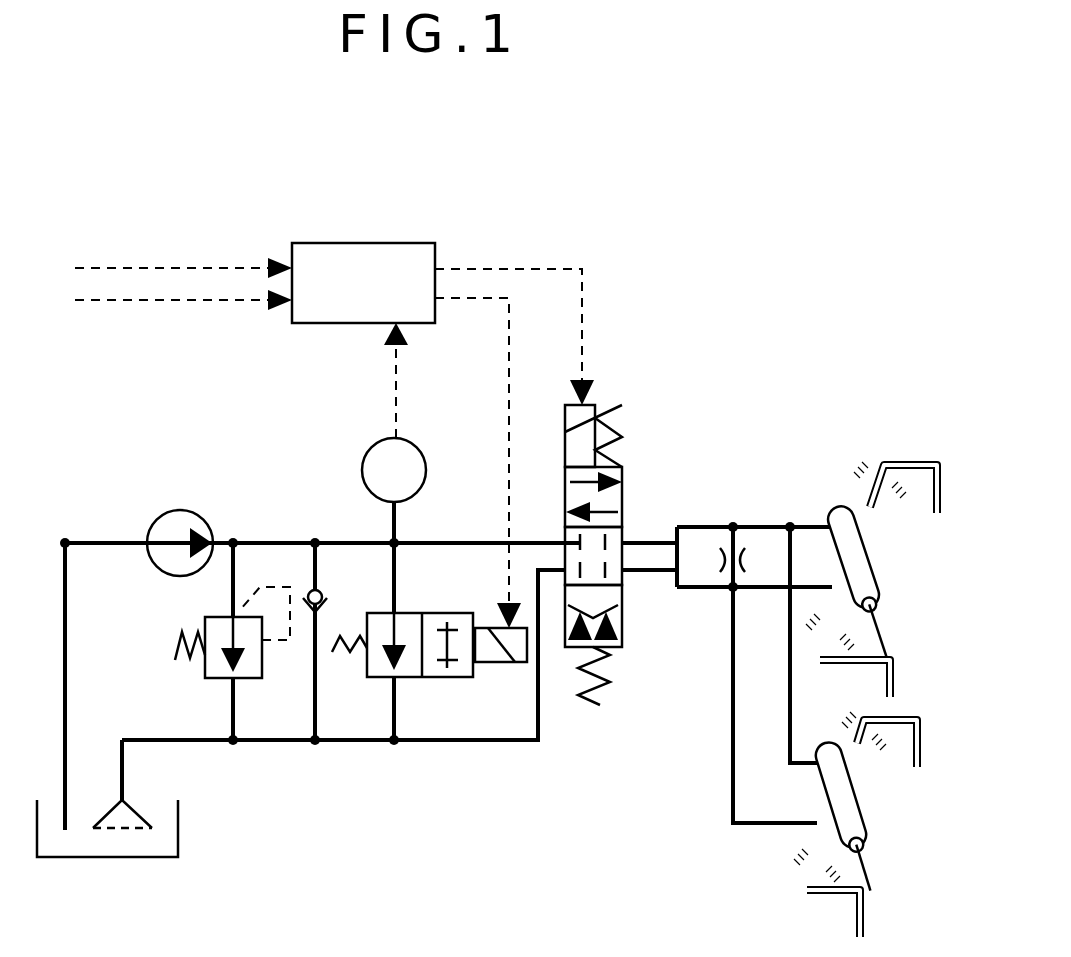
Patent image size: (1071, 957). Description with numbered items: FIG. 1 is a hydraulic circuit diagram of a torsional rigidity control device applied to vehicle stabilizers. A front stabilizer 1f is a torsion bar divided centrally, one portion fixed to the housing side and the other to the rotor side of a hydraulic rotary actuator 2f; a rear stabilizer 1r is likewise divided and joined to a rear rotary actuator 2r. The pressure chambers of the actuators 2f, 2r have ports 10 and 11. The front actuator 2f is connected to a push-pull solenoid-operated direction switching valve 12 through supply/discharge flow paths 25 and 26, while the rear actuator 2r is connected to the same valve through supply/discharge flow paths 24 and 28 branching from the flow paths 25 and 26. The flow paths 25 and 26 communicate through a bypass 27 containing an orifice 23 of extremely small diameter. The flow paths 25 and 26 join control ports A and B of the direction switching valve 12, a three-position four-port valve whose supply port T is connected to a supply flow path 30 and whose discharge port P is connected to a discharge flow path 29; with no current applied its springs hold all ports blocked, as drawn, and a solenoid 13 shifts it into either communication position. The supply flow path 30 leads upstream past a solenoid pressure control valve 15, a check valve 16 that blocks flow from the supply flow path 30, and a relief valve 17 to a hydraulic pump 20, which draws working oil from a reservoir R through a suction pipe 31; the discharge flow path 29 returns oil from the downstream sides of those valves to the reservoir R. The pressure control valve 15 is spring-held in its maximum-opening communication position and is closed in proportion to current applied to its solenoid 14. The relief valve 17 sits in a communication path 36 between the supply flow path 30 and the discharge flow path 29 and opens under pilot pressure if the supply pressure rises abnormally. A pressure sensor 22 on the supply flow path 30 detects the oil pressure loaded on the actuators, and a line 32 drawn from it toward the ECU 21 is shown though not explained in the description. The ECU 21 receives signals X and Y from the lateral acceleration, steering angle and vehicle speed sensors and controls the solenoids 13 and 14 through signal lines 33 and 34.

The stabilizer for front wheel 1f is at (905, 465).
The stabilizer for rear wheel 1r is at (820, 900).
The hydraulic rotary actuator 2f is at (870, 570).
The rotary actuator 2r is at (848, 812).
The port 10 is at (848, 525).
The port 11 is at (835, 585).
The direction switching valve 12 is at (622, 480).
The solenoid 13 is at (600, 405).
The solenoid 14 is at (505, 662).
The pressure control valve 15 is at (440, 677).
The check valve 16 is at (322, 597).
The relief valve 17 is at (215, 678).
The hydraulic pump 20 is at (180, 510).
The ECU 21 is at (375, 243).
The pressure sensor 22 is at (365, 455).
The orifice 23 is at (748, 555).
The supply/discharge flow path 24 is at (733, 795).
The supply/discharge flow path 25 is at (705, 527).
The supply/discharge flow path 26 is at (705, 587).
The bypass 27 is at (740, 587).
The supply/discharge flow path 28 is at (790, 718).
The discharge flow path 29 is at (500, 740).
The supply flow path 30 is at (455, 543).
The suction pipe 31 is at (65, 705).
The pressure signal line 32 is at (397, 413).
The signal line 33 is at (509, 335).
The signal line 34 is at (550, 268).
The communication path 36 is at (233, 580).
The signal X is at (195, 268).
The signal Y is at (200, 300).
The supply port T is at (565, 540).
The control port A is at (622, 540).
The control port B is at (622, 580).
The discharge port P is at (555, 585).
The reservoir R is at (178, 830).